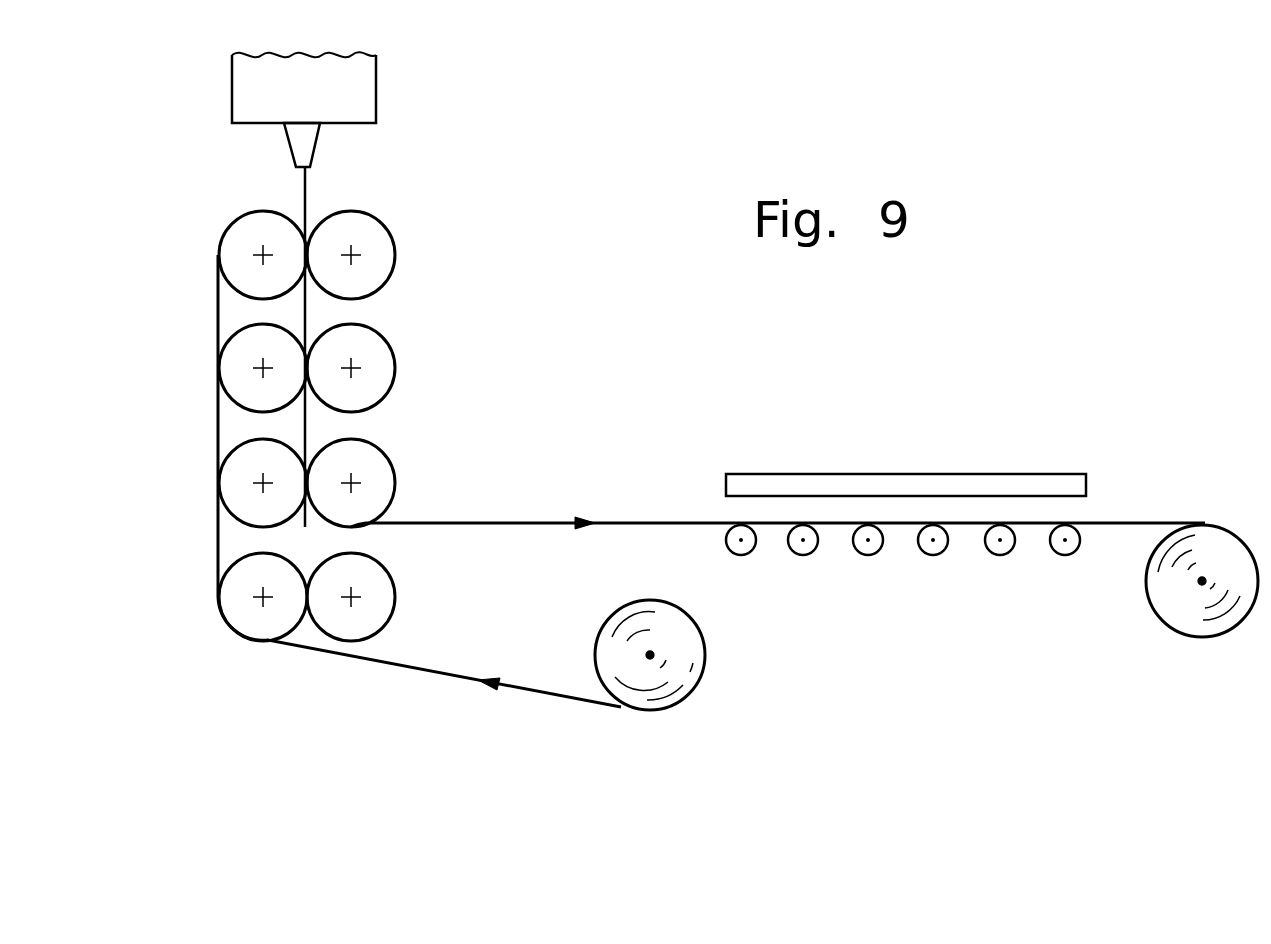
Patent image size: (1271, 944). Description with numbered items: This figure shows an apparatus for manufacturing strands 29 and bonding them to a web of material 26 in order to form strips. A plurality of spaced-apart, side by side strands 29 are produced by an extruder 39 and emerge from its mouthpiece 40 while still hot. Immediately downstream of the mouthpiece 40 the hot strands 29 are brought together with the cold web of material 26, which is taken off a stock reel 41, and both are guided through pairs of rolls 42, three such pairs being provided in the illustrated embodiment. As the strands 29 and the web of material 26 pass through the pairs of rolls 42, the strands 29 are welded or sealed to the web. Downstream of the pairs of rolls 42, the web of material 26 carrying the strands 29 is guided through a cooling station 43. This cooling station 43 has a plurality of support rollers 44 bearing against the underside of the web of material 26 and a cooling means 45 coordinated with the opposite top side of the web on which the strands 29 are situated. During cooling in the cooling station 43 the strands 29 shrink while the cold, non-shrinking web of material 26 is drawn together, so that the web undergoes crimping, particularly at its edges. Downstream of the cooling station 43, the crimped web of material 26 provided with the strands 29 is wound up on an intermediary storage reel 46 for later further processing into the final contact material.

The web of material 26 is at (217, 535).
The strands 29 is at (307, 195).
The extruder 39 is at (360, 97).
The mouthpiece 40 is at (298, 143).
The stock reel 41 is at (677, 677).
The pairs of rolls 42 is at (233, 270).
The cooling station 43 is at (906, 520).
The support rollers 44 is at (933, 542).
The cooling means 45 is at (872, 482).
The intermediary storage reel 46 is at (1167, 595).